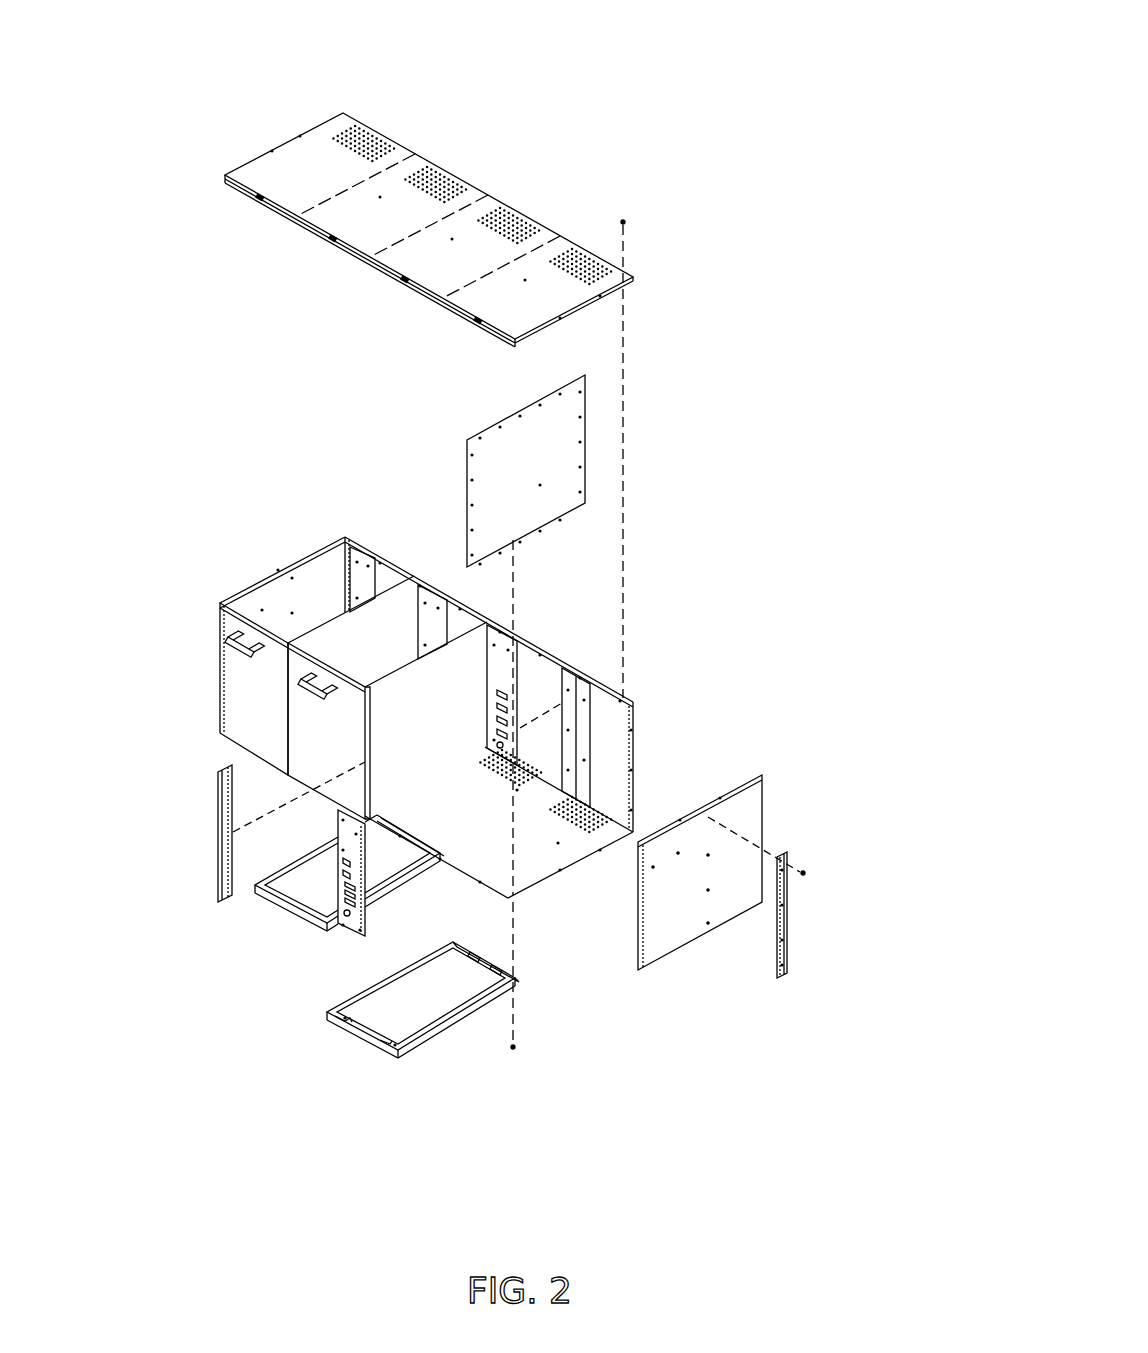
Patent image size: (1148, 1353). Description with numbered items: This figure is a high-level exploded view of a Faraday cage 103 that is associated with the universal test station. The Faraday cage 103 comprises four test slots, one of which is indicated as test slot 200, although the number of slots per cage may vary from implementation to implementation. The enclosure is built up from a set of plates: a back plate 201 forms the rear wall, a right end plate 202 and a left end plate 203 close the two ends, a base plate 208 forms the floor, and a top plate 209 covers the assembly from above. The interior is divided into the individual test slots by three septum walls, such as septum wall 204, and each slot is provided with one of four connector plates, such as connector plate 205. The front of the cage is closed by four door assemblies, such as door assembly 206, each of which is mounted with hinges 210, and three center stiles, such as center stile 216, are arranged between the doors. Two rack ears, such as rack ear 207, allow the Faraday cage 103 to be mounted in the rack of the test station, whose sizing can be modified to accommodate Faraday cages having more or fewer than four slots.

The Faraday cage 103 is at (705, 52).
The test slot 200 is at (275, 593).
The back plate 201 is at (610, 735).
The right end plate 202 is at (757, 773).
The left end plate 203 is at (293, 560).
The septum wall 204 is at (503, 422).
The connector plate 205 is at (360, 930).
The door assembly 206 is at (423, 1012).
The rack ear 207 is at (783, 853).
The base plate 208 is at (527, 867).
The top plate 209 is at (485, 197).
The hinges 210 is at (500, 973).
The center stile 216 is at (218, 888).